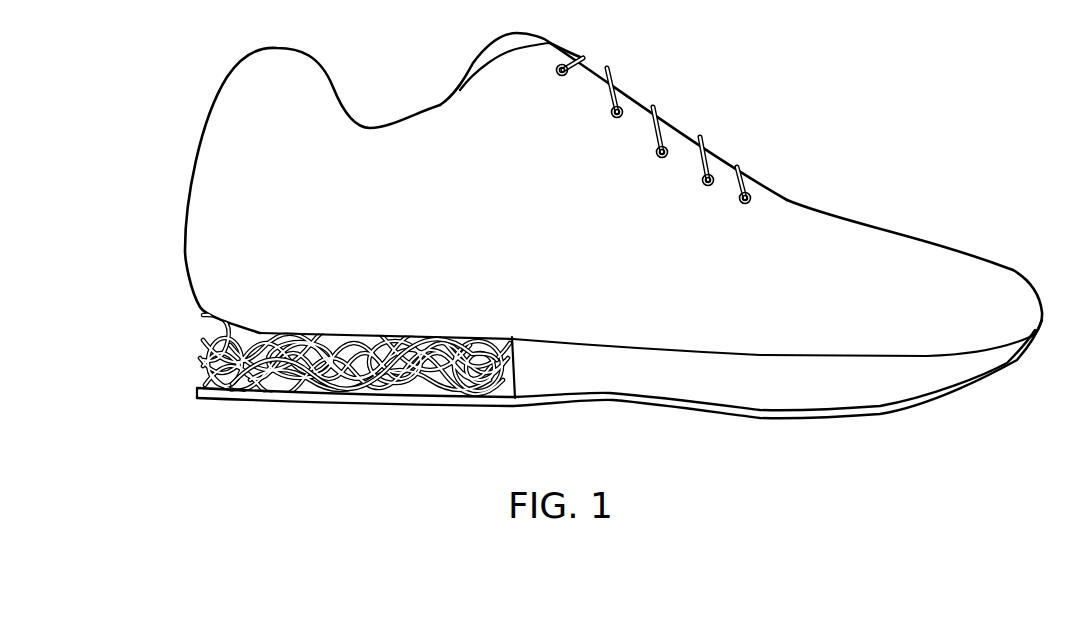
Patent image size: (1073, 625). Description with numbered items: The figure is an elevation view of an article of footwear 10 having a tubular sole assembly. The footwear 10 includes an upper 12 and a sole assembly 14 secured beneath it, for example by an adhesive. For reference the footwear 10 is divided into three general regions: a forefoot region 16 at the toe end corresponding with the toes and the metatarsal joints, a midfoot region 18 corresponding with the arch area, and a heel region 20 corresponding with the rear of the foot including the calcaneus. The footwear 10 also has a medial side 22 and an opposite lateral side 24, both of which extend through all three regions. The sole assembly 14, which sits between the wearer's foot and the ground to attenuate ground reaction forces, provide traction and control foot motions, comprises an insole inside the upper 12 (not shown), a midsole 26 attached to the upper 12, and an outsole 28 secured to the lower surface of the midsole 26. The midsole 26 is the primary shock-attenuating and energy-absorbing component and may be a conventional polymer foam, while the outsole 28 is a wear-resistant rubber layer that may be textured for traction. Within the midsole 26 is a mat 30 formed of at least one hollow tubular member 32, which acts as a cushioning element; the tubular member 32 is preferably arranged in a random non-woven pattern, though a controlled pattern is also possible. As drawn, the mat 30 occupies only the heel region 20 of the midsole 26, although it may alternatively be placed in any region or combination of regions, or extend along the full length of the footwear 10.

The footwear 10 is at (690, 104).
The upper 12 is at (788, 200).
The sole assembly 14 is at (180, 328).
The forefoot region 16 is at (916, 301).
The midfoot region 18 is at (564, 232).
The heel region 20 is at (239, 236).
The medial side 22 is at (740, 262).
The lateral side 24 is at (903, 226).
The midsole 26 is at (683, 362).
The outsole 28 is at (780, 421).
The mat 30 is at (381, 326).
The hollow tubular member 32 is at (440, 335).